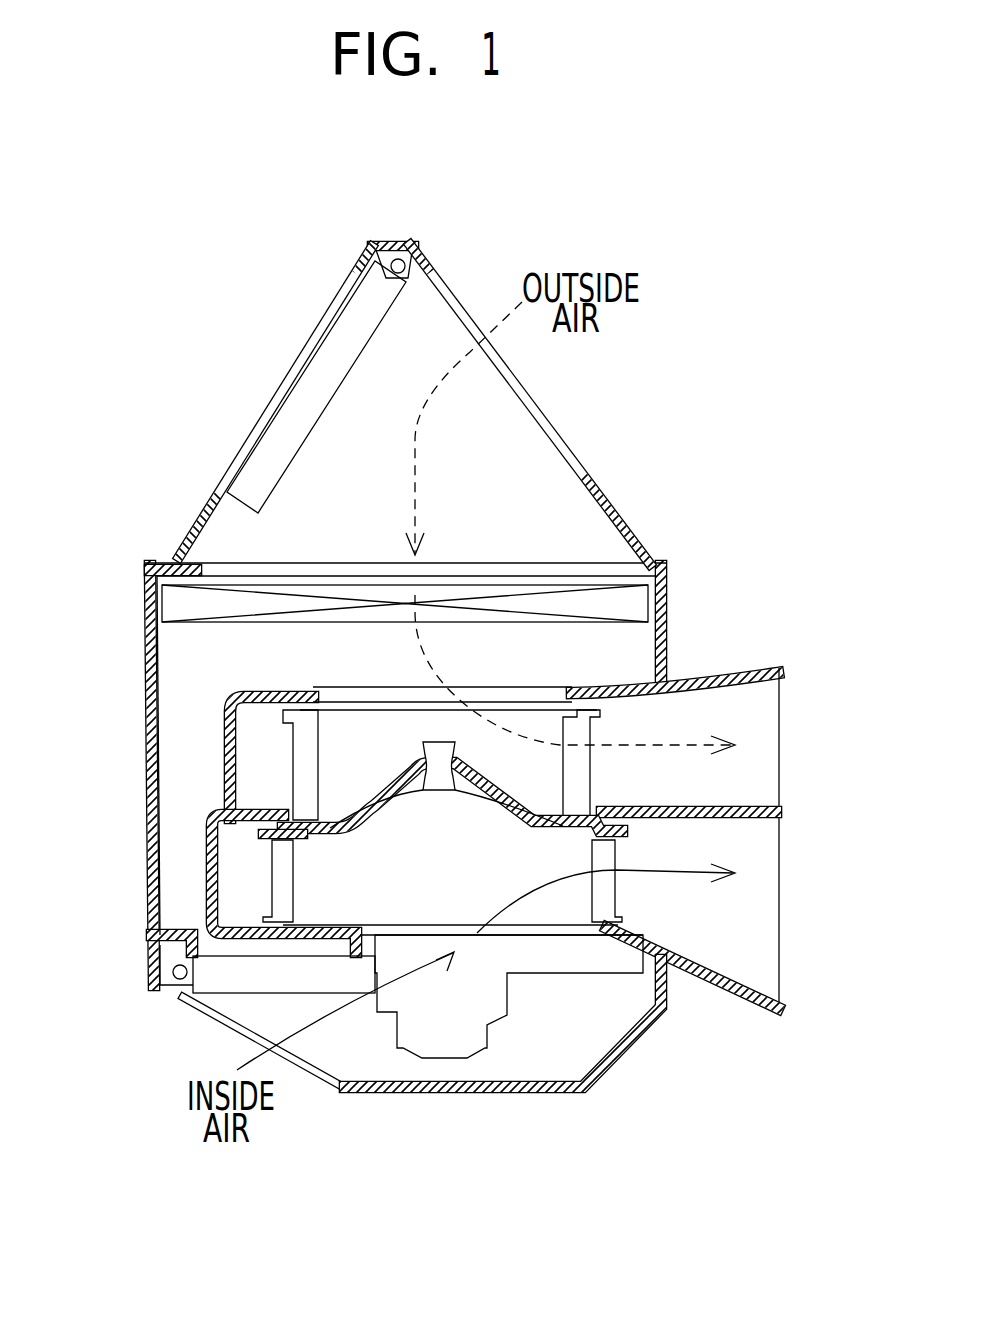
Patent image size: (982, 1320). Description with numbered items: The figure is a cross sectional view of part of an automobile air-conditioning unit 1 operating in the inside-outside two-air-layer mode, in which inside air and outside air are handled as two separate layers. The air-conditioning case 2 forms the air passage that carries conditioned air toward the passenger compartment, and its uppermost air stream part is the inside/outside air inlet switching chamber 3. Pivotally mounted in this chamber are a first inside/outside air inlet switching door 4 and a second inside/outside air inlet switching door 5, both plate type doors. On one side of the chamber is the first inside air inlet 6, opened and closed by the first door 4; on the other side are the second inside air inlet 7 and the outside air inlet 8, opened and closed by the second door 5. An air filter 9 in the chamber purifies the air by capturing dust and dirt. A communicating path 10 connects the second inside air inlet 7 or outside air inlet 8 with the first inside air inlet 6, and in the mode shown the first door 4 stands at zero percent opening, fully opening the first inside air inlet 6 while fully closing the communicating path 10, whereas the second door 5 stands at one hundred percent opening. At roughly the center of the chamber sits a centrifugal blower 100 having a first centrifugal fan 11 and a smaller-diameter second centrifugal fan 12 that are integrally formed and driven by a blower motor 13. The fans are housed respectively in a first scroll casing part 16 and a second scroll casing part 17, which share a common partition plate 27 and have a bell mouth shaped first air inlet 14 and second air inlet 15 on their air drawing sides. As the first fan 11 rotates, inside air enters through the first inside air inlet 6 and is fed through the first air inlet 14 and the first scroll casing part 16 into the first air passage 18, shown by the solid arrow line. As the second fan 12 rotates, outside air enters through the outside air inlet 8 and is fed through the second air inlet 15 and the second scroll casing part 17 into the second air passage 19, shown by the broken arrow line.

The air-conditioning unit 1 is at (322, 232).
The air-conditioning case 2 is at (391, 730).
The inside/outside air inlet switching chamber 3 is at (148, 564).
The first inside/outside air inlet switching door 4 is at (235, 975).
The second inside/outside air inlet switching door 5 is at (302, 407).
The first inside air inlet 6 is at (322, 1080).
The second inside air inlet 7 is at (325, 335).
The outside air inlet 8 is at (530, 407).
The air filter 9 is at (180, 607).
The communicating path 10 is at (188, 873).
The first centrifugal fan 11 is at (283, 860).
The second centrifugal fan 12 is at (307, 742).
The blower motor 13 is at (450, 1033).
The first air inlet 14 is at (567, 930).
The second air inlet 15 is at (535, 686).
The first scroll casing part 16 is at (215, 892).
The second scroll casing part 17 is at (233, 698).
The first air passage 18 is at (747, 950).
The second air passage 19 is at (745, 716).
The partition plate 27 is at (742, 803).
The centrifugal blower 100 is at (413, 870).